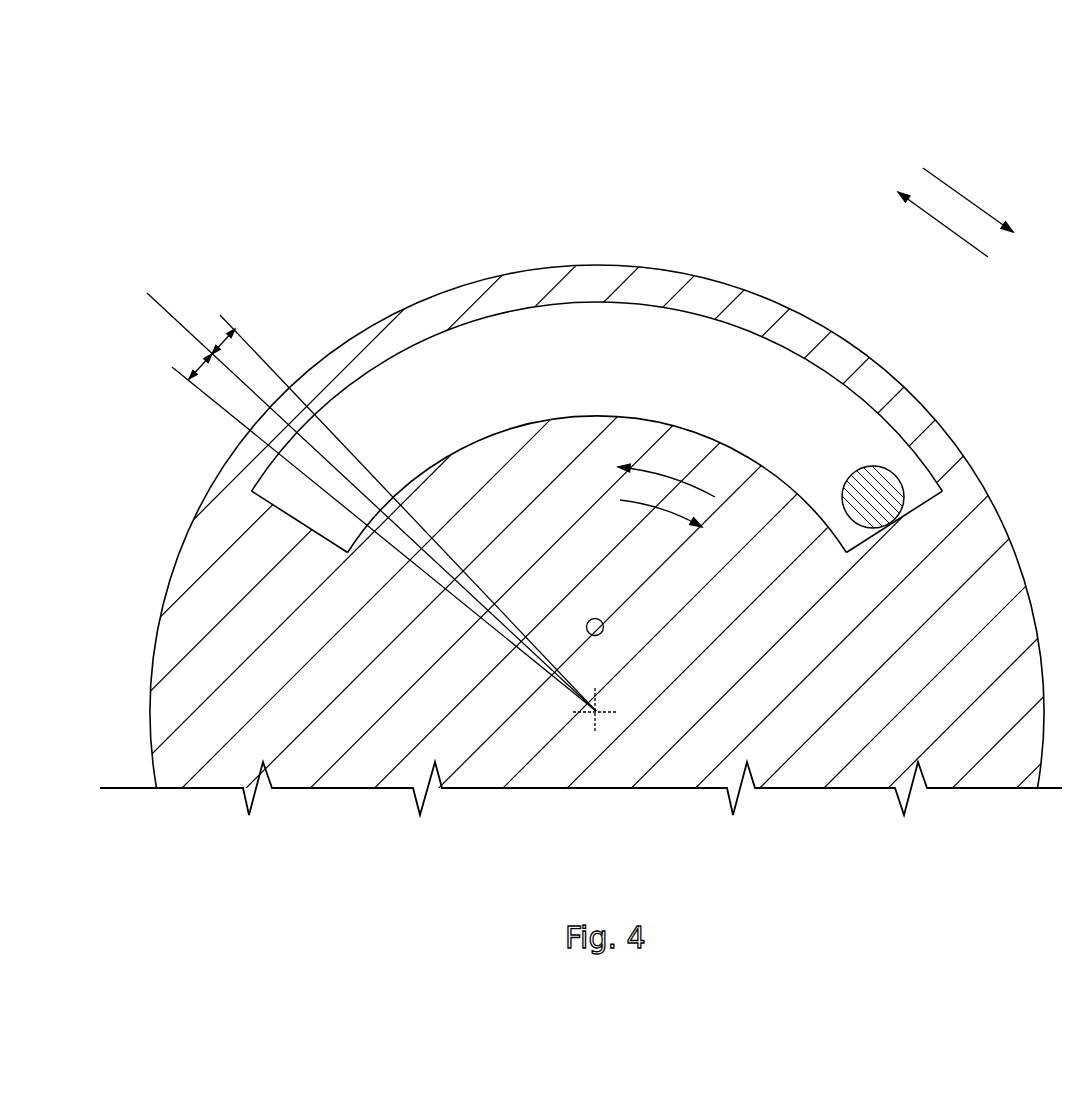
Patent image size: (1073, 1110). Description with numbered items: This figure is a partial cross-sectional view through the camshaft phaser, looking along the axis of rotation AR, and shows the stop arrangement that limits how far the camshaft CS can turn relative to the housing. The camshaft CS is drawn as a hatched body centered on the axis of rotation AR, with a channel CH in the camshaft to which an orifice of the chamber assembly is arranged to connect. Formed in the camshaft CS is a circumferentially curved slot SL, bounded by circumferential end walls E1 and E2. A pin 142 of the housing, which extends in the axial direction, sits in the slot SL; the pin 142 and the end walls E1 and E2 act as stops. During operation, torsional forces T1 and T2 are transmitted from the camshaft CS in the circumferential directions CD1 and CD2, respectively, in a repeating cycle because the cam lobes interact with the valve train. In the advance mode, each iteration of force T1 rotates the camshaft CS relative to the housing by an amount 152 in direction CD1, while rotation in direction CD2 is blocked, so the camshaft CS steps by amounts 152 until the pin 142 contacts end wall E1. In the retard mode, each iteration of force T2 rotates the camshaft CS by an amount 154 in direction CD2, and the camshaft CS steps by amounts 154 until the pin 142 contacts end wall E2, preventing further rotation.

The amount of rotation 152 is at (223, 337).
The amount of rotation 154 is at (205, 358).
The pin 142 is at (872, 490).
The circumferentially curved slot SL is at (475, 340).
The camshaft CS is at (922, 397).
The circumferential end wall E1 is at (923, 547).
The circumferential end wall E2 is at (297, 525).
The circumferential direction CD1 is at (998, 218).
The circumferential direction CD2 is at (942, 224).
The torsional force T1 is at (662, 510).
The torsional force T2 is at (660, 472).
The channel CH is at (603, 623).
The axis of rotation AR is at (598, 710).